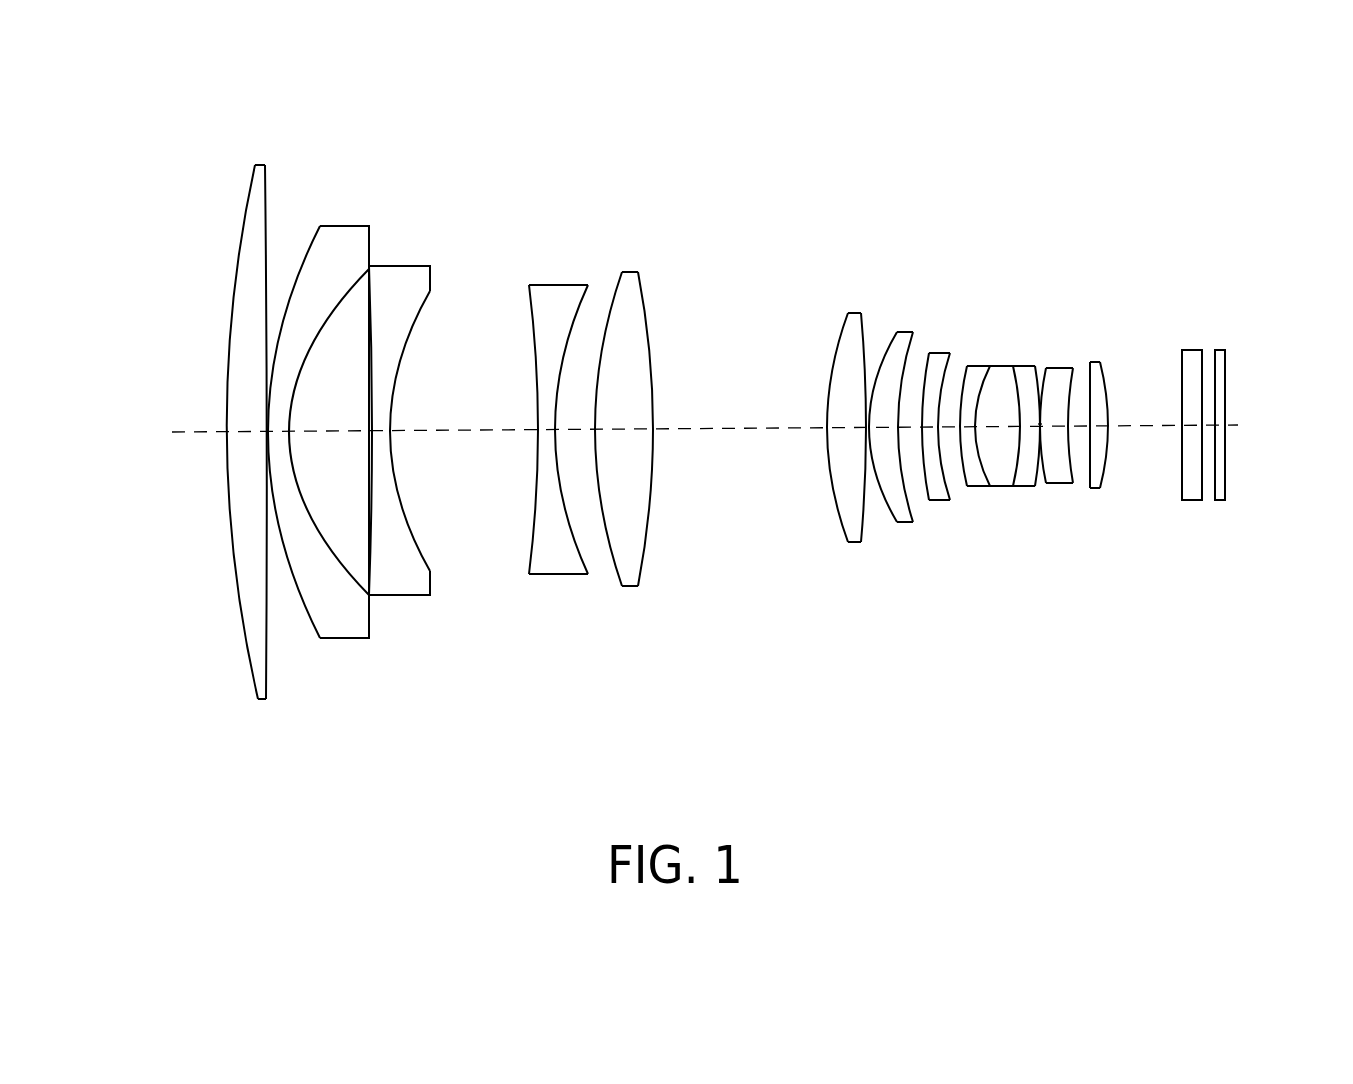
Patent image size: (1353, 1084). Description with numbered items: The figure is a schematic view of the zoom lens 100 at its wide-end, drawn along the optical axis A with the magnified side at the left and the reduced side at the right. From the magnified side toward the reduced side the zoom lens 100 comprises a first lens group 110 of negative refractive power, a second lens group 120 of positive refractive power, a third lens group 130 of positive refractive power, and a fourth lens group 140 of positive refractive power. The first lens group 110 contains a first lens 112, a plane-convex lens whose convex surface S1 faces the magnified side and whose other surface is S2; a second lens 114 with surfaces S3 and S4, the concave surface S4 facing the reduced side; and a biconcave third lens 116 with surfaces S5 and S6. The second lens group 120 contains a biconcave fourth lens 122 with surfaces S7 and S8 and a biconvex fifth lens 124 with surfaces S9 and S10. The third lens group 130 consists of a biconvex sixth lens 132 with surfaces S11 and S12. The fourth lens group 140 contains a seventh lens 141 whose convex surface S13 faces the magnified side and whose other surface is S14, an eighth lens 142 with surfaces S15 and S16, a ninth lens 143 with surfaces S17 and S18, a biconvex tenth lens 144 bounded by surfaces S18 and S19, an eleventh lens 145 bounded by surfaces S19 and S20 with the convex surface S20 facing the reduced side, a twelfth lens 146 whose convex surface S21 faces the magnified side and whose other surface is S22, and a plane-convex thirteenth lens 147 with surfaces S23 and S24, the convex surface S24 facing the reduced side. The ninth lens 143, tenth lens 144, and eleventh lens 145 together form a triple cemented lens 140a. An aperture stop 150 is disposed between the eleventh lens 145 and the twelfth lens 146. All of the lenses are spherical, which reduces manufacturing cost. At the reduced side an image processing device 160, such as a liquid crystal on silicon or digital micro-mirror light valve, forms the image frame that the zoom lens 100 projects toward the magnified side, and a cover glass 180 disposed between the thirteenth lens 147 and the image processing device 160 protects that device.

The zoom lens 100 is at (700, 466).
The first lens group 110 is at (351, 466).
The first lens 112 is at (246, 442).
The second lens 114 is at (340, 453).
The third lens 116 is at (436, 477).
The second lens group 120 is at (621, 454).
The fourth lens 122 is at (568, 434).
The fifth lens 124 is at (658, 436).
The third lens group 130 is at (827, 447).
The sixth lens 132 is at (827, 447).
The fourth lens group 140 is at (1042, 460).
The triple cemented lens 140a is at (1026, 445).
The seventh lens 141 is at (903, 411).
The eighth lens 142 is at (942, 446).
The ninth lens 143 is at (990, 425).
The tenth lens 144 is at (1024, 458).
The eleventh lens 145 is at (1055, 430).
The twelfth lens 146 is at (1127, 448).
The thirteenth lens 147 is at (1151, 473).
The aperture stop 150 is at (1040, 386).
The image processing device 160 is at (1225, 486).
The cover glass 180 is at (1197, 492).
The optical axis A is at (758, 423).
The convex surface S1 is at (242, 197).
The surface S2 is at (265, 215).
The surface S3 is at (303, 252).
The concave surface S4 is at (315, 330).
The surface S5 is at (367, 352).
The surface S6 is at (408, 337).
The surface S7 is at (528, 318).
The surface S8 is at (567, 347).
The surface S9 is at (598, 337).
The surface S10 is at (650, 352).
The surface S11 is at (835, 357).
The surface S12 is at (865, 352).
The convex surface S13 is at (890, 340).
The surface S14 is at (918, 393).
The surface S15 is at (903, 392).
The concave surface S16 is at (940, 408).
The surface S17 is at (955, 400).
The concave surface S18 is at (980, 403).
The surface S19 is at (1012, 397).
The convex surface S20 is at (1033, 392).
The convex surface S21 is at (1044, 395).
The surface S22 is at (1070, 407).
The surface S23 is at (1087, 403).
The convex surface S24 is at (1107, 393).